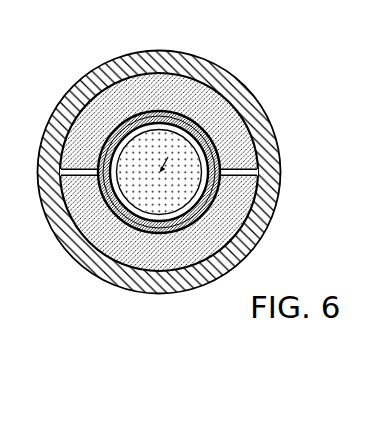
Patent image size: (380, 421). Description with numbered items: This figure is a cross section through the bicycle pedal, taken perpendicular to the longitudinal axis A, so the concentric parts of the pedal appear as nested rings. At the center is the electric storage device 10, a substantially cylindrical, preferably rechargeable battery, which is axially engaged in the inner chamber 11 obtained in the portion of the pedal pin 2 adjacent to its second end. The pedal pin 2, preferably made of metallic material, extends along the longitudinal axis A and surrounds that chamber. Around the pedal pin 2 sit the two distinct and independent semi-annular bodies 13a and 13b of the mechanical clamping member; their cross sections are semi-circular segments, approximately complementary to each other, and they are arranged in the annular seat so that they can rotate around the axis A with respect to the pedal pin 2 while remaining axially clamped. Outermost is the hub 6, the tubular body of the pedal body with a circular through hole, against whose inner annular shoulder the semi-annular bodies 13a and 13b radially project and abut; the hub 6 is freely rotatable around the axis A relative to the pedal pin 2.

The electric storage device 10 is at (128, 156).
The inner chamber 11 is at (124, 198).
The pedal pin 2 is at (217, 152).
The semi-annular body 13a is at (198, 84).
The semi-annular body 13b is at (182, 268).
The hub 6 is at (262, 256).
The longitudinal axis A is at (254, 117).